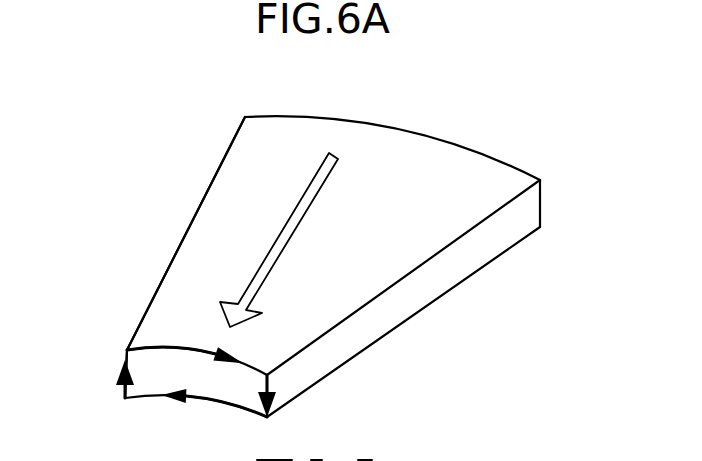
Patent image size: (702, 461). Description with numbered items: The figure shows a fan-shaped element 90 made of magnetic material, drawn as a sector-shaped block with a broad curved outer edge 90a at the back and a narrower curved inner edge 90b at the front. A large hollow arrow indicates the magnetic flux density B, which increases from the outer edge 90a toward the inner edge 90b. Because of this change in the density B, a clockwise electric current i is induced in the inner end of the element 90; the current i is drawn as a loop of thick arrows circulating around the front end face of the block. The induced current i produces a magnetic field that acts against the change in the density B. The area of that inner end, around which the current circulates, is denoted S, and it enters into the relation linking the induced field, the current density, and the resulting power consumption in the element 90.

The fan-shaped element 90 is at (472, 168).
The outer edge 90a is at (398, 142).
The inner edge 90b is at (152, 337).
The magnetic flux density B is at (279, 240).
The area of the inner end S is at (150, 377).
The electric current i is at (196, 392).